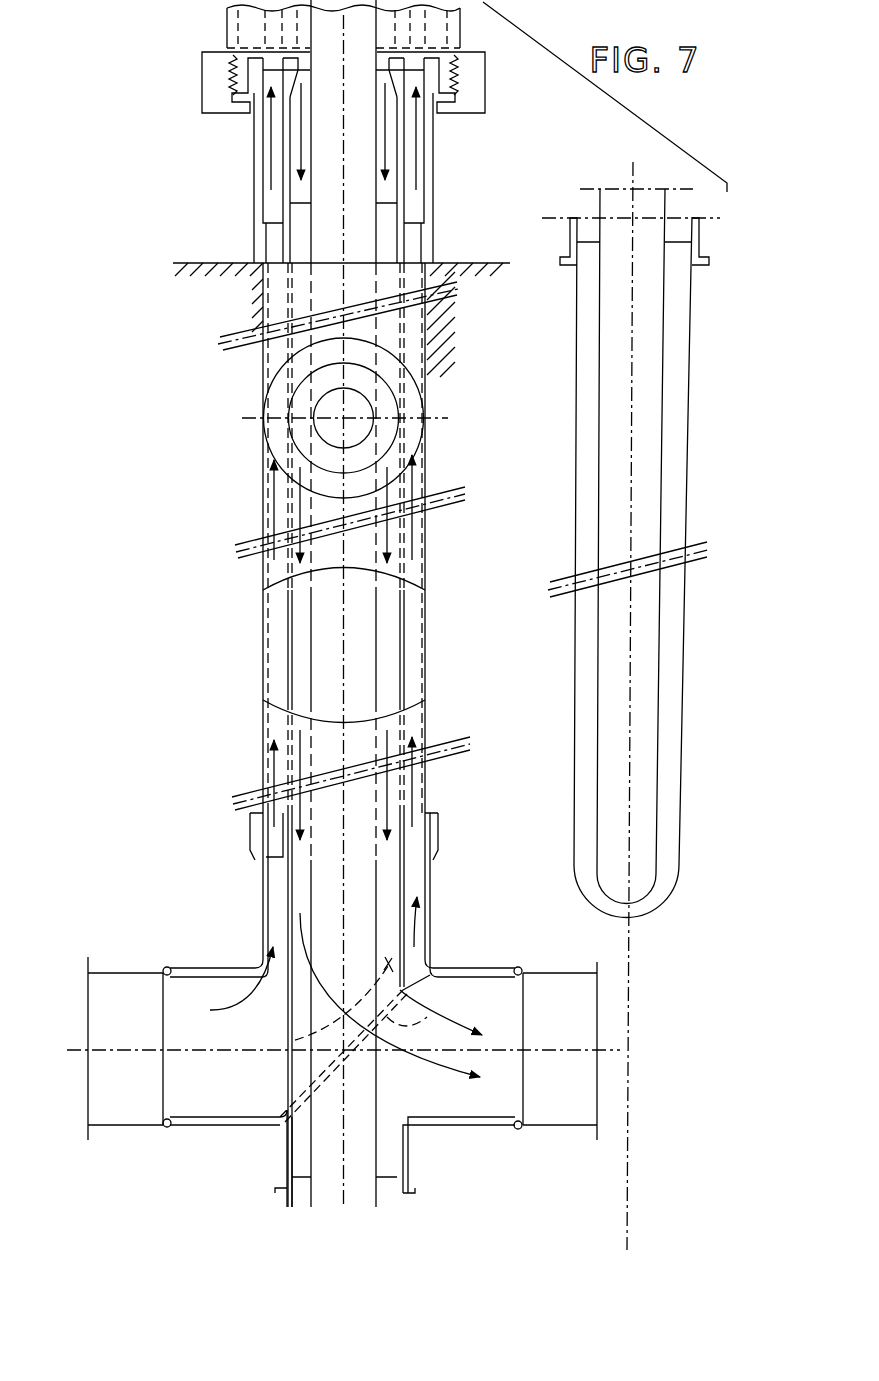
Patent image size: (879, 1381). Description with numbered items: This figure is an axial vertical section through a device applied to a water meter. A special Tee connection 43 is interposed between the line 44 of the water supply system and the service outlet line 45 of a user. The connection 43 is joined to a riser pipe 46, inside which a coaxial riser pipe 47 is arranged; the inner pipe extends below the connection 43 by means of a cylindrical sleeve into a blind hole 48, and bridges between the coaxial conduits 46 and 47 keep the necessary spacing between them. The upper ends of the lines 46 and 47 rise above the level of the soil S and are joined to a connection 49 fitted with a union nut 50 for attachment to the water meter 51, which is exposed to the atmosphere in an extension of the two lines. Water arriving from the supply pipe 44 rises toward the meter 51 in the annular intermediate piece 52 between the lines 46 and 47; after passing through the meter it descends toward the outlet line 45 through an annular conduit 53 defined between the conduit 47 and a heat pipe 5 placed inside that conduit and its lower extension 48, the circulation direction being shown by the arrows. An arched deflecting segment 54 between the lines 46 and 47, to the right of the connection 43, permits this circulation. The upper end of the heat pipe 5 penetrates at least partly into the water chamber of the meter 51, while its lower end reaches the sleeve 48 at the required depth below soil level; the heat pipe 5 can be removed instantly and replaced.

The heat pipe 5 is at (360, 137).
The Tee connection 43 is at (433, 912).
The line of the water supply system 44 is at (127, 970).
The service outlet line 45 is at (553, 970).
The riser pipe 46 is at (430, 360).
The coaxial riser pipe 47 is at (412, 386).
The blind hole 48 is at (577, 500).
The connection 49 is at (440, 168).
The union nut 50 is at (200, 92).
The water meter 51 is at (228, 30).
The annular intermediate piece 52 is at (270, 143).
The annular conduit 53 is at (253, 230).
The arched deflecting segment 54 is at (420, 983).
The soil S is at (207, 262).